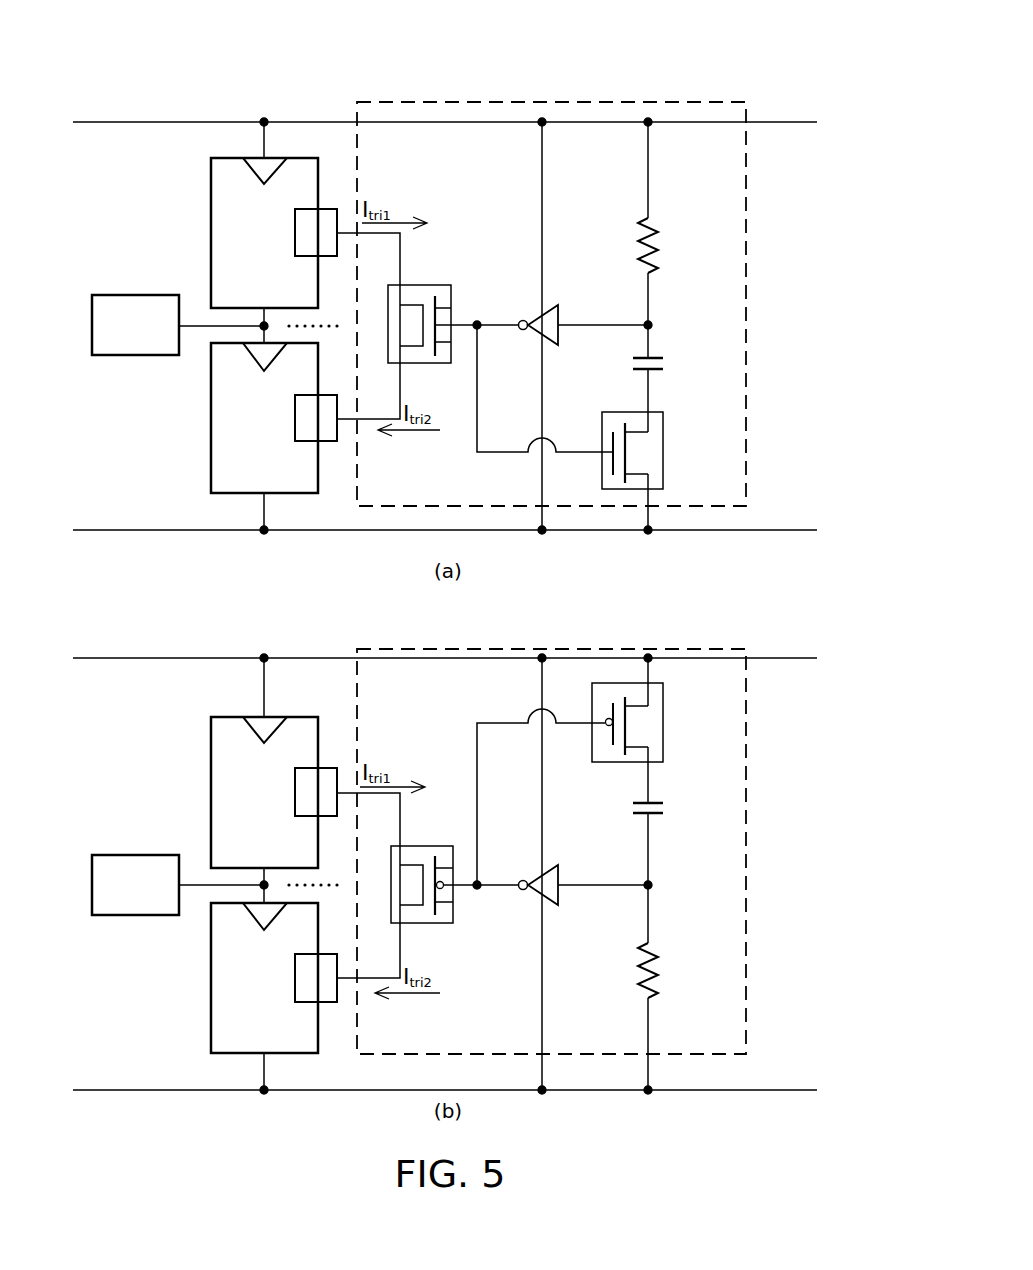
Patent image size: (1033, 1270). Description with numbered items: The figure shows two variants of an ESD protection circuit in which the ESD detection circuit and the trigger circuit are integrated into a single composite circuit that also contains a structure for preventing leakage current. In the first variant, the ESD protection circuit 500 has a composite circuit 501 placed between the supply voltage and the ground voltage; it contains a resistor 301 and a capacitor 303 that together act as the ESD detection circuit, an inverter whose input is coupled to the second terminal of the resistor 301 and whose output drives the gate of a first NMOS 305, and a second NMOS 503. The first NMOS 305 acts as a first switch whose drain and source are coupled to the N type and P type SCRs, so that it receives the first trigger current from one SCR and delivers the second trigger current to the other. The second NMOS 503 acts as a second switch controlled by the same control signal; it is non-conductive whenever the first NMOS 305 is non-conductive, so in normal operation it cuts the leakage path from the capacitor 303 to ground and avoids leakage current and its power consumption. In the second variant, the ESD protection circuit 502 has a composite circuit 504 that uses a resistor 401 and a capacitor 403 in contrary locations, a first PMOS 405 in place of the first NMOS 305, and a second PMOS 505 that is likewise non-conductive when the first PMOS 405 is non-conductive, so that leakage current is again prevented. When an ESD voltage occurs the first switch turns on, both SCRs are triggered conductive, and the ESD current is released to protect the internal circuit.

The resistor 301 is at (656, 258).
The capacitor 303 is at (666, 351).
The first NMOS 305 is at (443, 283).
The resistor 401 is at (658, 985).
The capacitor 403 is at (658, 816).
The first PMOS 405 is at (445, 845).
The ESD protection circuit 500 is at (690, 74).
The composite circuit 501 is at (746, 340).
The ESD protection circuit 502 is at (690, 636).
The second NMOS 503 is at (612, 410).
The composite circuit 504 is at (746, 905).
The second PMOS 505 is at (663, 722).